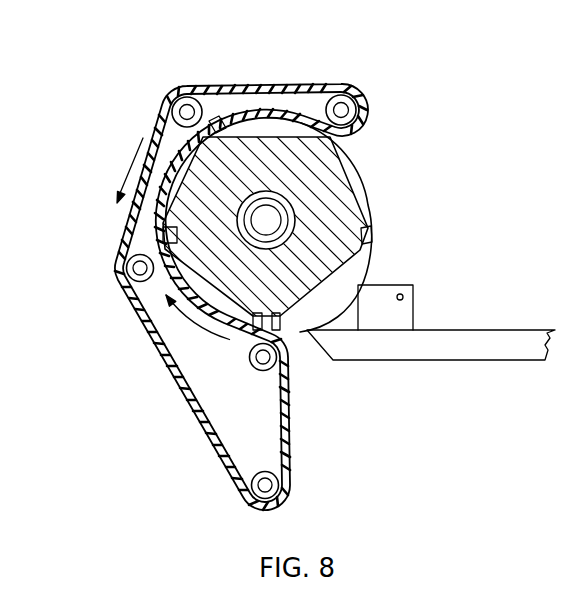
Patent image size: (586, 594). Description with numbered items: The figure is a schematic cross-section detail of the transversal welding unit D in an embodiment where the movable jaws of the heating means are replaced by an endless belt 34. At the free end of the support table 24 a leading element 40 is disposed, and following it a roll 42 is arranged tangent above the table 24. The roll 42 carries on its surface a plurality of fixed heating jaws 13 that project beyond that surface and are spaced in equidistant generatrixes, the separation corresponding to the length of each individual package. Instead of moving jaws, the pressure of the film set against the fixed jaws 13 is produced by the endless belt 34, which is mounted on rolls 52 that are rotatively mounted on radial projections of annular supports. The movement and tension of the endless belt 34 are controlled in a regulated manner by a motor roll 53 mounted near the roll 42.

The fixed heating jaws 13 is at (207, 117).
The moving table of films 24 is at (470, 355).
The endless belt 34 is at (262, 87).
The leading means 40 is at (388, 282).
The roll 42 is at (333, 180).
The rolls 52 is at (180, 102).
The regulating motor roll 53 is at (277, 480).
The transversal welding unit D is at (157, 357).